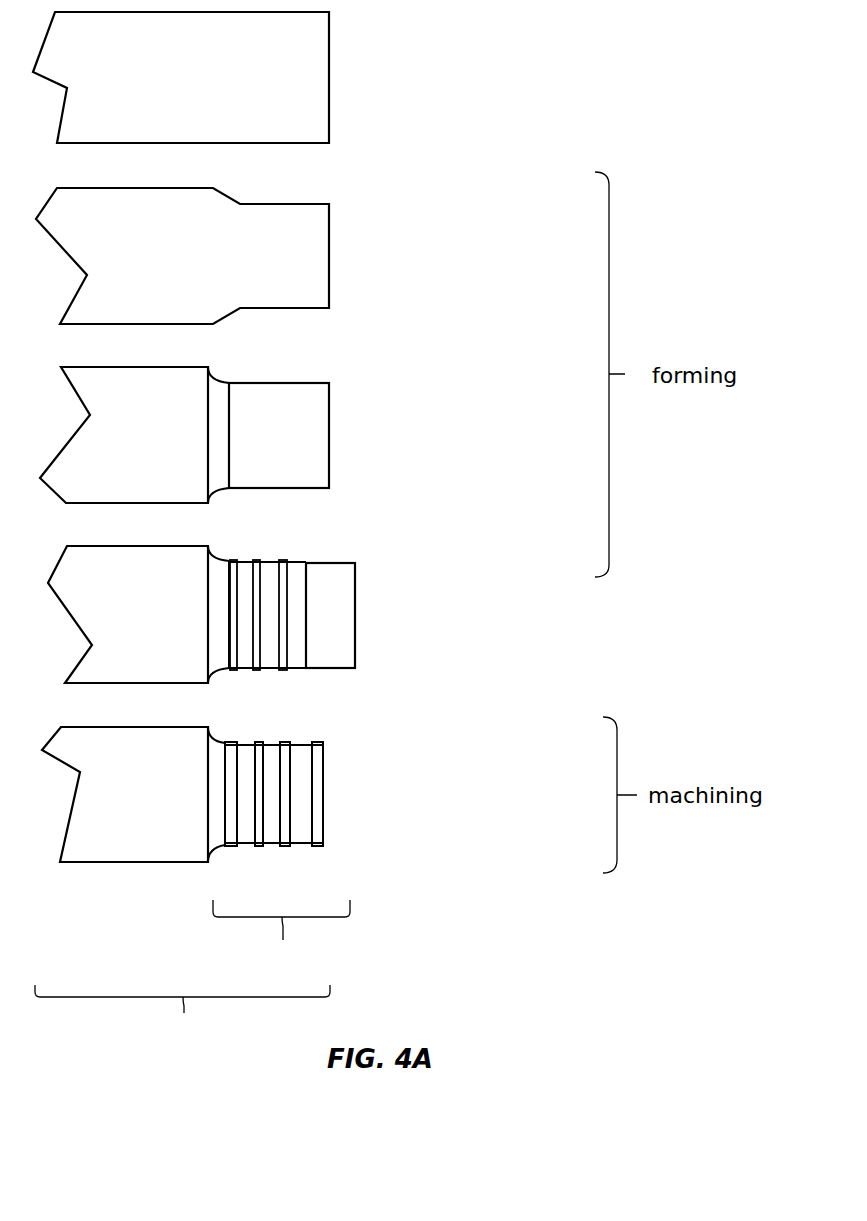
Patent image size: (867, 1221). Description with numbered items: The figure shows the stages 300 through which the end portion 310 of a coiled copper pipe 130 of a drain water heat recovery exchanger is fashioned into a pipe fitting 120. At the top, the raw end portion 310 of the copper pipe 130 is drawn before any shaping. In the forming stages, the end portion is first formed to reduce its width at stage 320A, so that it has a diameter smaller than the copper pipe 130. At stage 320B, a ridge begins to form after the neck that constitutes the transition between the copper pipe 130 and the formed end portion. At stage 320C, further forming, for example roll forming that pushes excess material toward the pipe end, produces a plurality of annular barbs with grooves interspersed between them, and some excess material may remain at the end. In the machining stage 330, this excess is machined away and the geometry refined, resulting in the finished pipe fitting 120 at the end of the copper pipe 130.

The end portion 310 is at (306, 100).
The first forming stage 320A is at (312, 250).
The second forming stage 320B is at (307, 431).
The third forming stage 320C is at (329, 600).
The machining stage 330 is at (315, 785).
The pipe fitting 120 is at (281, 940).
The copper pipe 130 is at (182, 1020).
The stages 300 is at (437, 882).